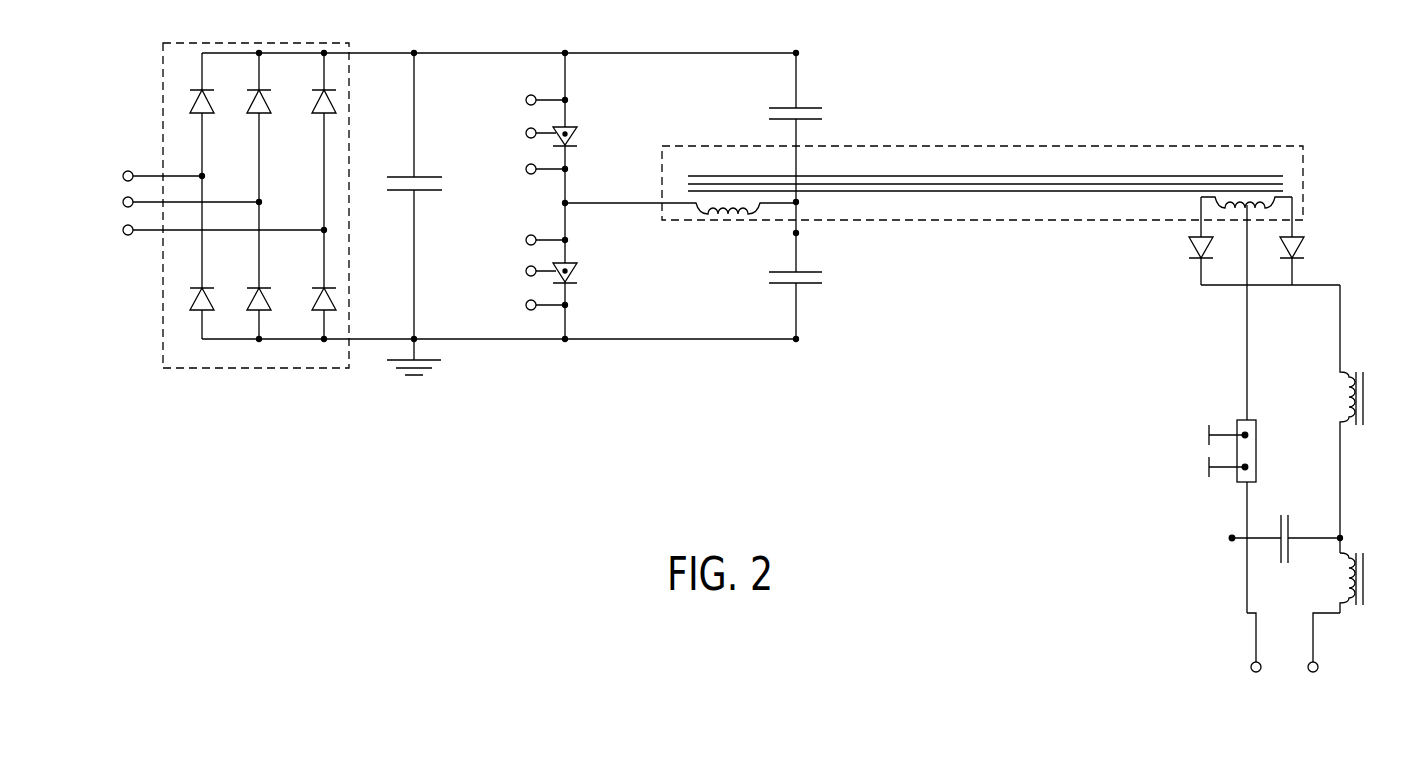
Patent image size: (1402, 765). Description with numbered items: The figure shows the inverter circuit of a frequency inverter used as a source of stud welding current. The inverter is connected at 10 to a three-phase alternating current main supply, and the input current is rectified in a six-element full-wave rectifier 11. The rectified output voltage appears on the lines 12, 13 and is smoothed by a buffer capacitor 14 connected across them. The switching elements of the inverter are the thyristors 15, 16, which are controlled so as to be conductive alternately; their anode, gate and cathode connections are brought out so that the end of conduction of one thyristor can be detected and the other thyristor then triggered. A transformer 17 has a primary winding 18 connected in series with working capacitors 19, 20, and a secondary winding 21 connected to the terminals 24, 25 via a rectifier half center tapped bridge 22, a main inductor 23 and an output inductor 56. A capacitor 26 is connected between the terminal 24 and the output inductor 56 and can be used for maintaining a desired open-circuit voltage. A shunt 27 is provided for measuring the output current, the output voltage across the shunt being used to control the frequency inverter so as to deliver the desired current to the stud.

The three-phase main supply connection 10 is at (123, 176).
The six-element full-wave rectifier 11 is at (300, 370).
The line 12 is at (522, 52).
The line 13 is at (478, 341).
The buffer capacitor 14 is at (424, 191).
The thyristor 15 is at (577, 131).
The thyristor 16 is at (577, 268).
The transformer 17 is at (1204, 139).
The primary winding 18 is at (711, 214).
The working capacitor 19 is at (778, 107).
The working capacitor 20 is at (811, 284).
The secondary winding 21 is at (1247, 186).
The rectifier half center tapped bridge 22 is at (1300, 245).
The main inductor 23 is at (1332, 393).
The terminal 24 is at (1250, 671).
The terminal 25 is at (1307, 671).
The capacitor 26 is at (1291, 514).
The shunt 27 is at (1235, 481).
The output inductor 56 is at (1366, 562).